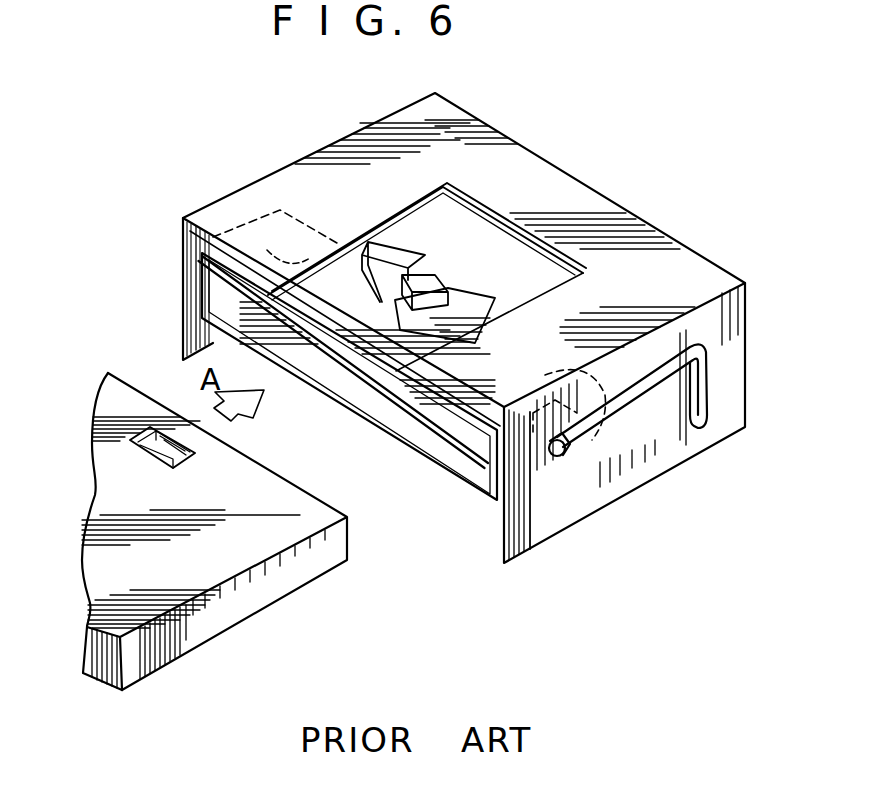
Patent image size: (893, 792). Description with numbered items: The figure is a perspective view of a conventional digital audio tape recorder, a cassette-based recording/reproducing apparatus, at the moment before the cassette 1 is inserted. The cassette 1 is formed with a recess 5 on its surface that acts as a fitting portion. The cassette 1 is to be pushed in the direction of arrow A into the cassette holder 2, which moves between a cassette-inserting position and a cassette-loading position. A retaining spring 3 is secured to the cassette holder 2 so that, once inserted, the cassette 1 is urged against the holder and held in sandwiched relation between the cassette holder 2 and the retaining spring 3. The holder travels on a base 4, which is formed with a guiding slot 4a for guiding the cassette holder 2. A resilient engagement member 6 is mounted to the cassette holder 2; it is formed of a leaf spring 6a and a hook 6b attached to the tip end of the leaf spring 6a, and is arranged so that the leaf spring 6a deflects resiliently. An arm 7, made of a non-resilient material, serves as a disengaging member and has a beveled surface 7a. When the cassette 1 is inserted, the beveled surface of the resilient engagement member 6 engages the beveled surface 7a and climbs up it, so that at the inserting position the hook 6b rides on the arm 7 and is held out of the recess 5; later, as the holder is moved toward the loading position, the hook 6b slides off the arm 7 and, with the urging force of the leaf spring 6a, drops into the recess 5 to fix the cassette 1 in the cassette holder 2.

The cassette 1 is at (327, 573).
The cassette holder 2 is at (440, 447).
The retaining spring 3 is at (280, 255).
The base 4 is at (665, 243).
The guiding slot 4a is at (660, 397).
The recess 5 is at (192, 433).
The resilient engagement member 6 is at (443, 273).
The leaf spring 6a is at (364, 247).
The hook 6b is at (344, 362).
The arm 7 is at (492, 315).
The beveled surface 7a is at (473, 280).